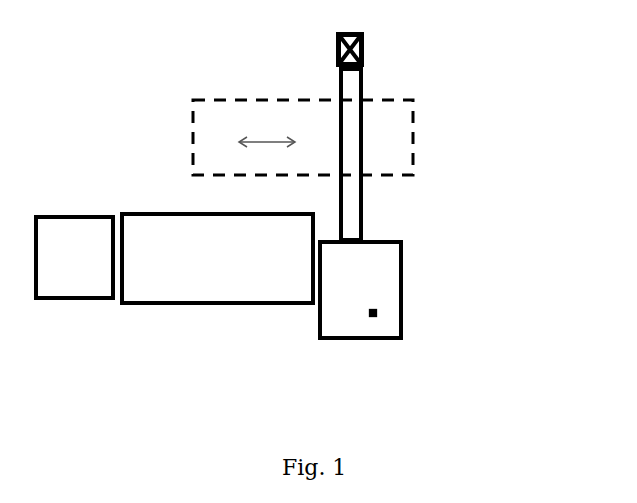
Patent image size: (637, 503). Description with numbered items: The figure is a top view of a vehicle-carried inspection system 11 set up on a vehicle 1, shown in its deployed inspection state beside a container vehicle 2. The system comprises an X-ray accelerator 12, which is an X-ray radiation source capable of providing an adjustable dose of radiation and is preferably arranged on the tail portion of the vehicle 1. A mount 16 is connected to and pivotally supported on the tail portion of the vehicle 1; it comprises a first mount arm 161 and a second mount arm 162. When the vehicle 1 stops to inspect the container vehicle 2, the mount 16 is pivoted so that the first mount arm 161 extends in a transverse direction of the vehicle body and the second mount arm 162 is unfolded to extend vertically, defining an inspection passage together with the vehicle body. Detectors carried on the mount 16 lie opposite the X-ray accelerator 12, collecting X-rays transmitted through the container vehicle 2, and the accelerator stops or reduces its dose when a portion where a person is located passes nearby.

The vehicle 1 is at (117, 324).
The container vehicle 2 is at (273, 98).
The vehicle-carried inspection system 11 is at (433, 236).
The X-ray accelerator 12 is at (373, 322).
The mount 16 is at (459, 138).
The first mount arm 161 is at (427, 154).
The second mount arm 162 is at (365, 52).